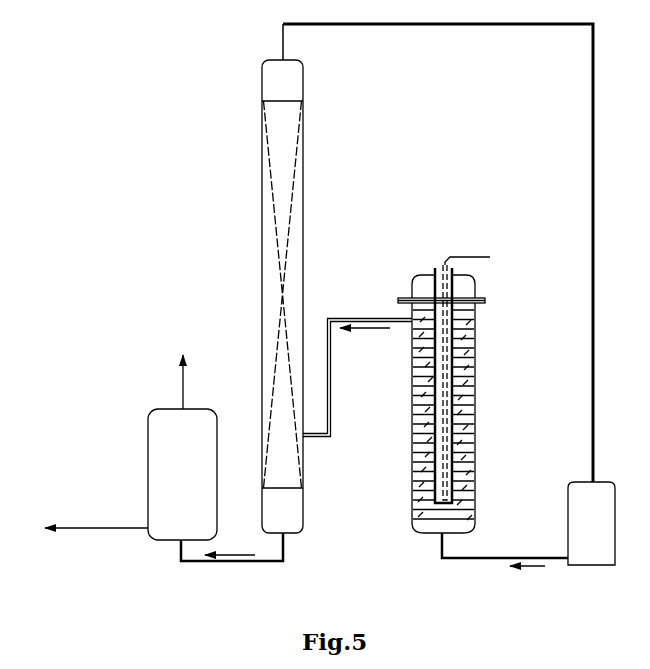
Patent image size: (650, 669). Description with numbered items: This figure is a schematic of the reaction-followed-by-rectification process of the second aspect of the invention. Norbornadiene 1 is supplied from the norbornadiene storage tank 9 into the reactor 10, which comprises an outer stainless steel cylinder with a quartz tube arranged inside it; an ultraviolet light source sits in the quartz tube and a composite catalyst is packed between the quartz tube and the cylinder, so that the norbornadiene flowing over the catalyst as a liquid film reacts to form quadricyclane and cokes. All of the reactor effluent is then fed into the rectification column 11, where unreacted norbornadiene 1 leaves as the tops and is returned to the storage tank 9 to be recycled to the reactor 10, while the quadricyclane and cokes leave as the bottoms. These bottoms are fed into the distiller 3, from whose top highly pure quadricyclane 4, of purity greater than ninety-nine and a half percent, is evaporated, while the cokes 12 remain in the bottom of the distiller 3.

The norbornadiene 1 is at (482, 35).
The distiller 3 is at (182, 474).
The highly pure quadricyclane 4 is at (180, 384).
The norbornadiene storage tank 9 is at (591, 523).
The reactor 10 is at (400, 278).
The rectification column 11 is at (253, 246).
The cokes 12 is at (89, 503).